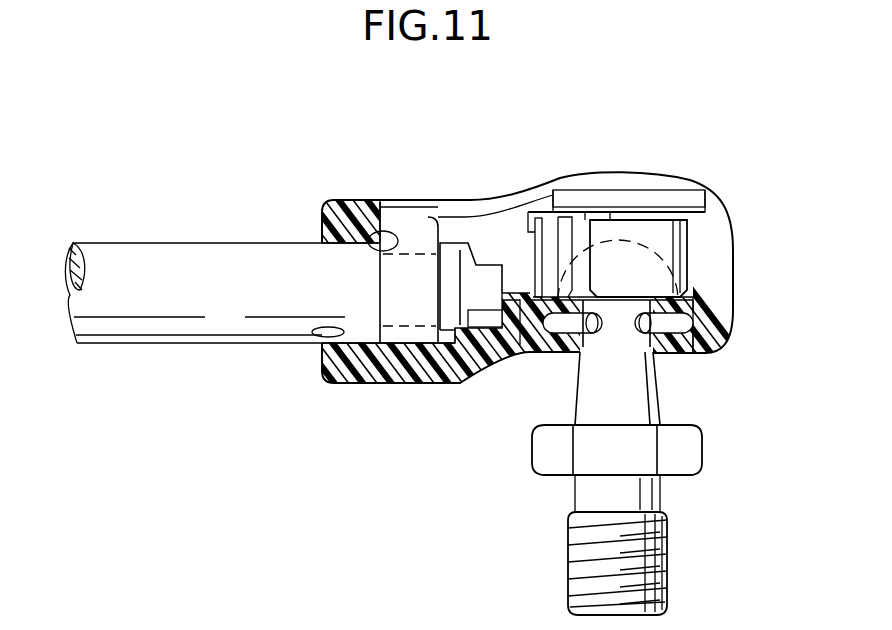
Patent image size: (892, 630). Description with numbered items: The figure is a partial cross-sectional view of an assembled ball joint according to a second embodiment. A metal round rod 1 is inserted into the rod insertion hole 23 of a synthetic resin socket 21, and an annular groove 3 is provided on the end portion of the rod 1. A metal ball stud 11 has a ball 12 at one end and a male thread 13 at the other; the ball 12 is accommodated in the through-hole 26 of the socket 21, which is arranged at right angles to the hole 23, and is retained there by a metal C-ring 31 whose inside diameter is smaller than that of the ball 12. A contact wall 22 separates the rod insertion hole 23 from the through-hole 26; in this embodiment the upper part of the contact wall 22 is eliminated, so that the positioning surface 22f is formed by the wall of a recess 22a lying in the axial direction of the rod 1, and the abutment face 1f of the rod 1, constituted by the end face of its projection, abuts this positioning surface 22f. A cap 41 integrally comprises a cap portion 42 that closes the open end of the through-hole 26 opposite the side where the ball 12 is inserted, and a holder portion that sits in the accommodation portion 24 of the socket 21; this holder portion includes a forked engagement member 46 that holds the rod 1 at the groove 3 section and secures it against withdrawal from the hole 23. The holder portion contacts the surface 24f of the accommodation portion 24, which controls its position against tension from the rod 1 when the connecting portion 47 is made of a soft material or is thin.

The round rod 1 is at (180, 343).
The abutment face 1f is at (503, 350).
The annular groove 3 is at (402, 322).
The ball stud 11 is at (698, 438).
The ball 12 is at (613, 303).
The male thread 13 is at (668, 545).
The socket 21 is at (725, 213).
The contact wall 22 is at (532, 297).
The recess 22a is at (455, 347).
The positioning surface 22f is at (458, 345).
The rod insertion hole 23 is at (345, 330).
The accommodation portion 24 is at (436, 225).
The contact surface 24f is at (365, 238).
The through-hole 26 is at (705, 305).
The C-ring 31 is at (700, 332).
The cap 41 is at (538, 191).
The cap portion 42 is at (650, 190).
The forked engagement member 46 is at (400, 207).
The connecting portion 47 is at (492, 200).